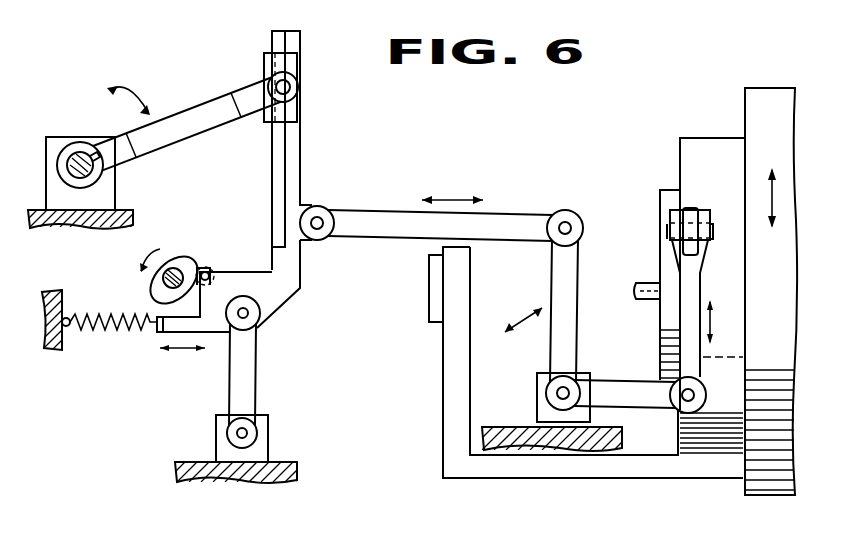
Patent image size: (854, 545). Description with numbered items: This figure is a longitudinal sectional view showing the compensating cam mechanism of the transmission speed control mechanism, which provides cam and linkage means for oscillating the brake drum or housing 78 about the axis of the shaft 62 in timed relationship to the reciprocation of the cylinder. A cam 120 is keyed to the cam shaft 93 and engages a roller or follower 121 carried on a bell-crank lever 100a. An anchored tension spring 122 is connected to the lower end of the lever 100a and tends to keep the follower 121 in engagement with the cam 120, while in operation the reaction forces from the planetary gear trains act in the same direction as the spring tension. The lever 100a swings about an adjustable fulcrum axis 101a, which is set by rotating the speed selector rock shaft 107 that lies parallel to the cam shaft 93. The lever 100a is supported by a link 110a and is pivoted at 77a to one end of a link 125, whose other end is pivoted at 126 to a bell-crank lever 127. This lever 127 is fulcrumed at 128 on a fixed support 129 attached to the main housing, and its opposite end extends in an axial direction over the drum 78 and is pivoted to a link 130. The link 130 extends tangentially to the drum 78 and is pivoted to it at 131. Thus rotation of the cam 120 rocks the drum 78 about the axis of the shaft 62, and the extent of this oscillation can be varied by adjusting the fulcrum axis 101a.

The speed selector rock shaft 107 is at (80, 150).
The adjustable fulcrum axis 101a is at (298, 89).
The bell-crank lever 100a is at (294, 273).
The pivot 77a is at (318, 214).
The link 125 is at (508, 214).
The pivot 126 is at (584, 228).
The bell-crank lever 127 is at (578, 273).
The fulcrum 128 is at (575, 383).
The fixed support 129 is at (560, 444).
The shaft 62 is at (650, 300).
The brake drum 78 is at (698, 140).
The pivot 131 is at (712, 226).
The link 130 is at (697, 276).
The link 110a is at (252, 365).
The cam 120 is at (183, 258).
The cam shaft 93 is at (170, 267).
The roller or follower 121 is at (212, 268).
The tension spring 122 is at (98, 334).